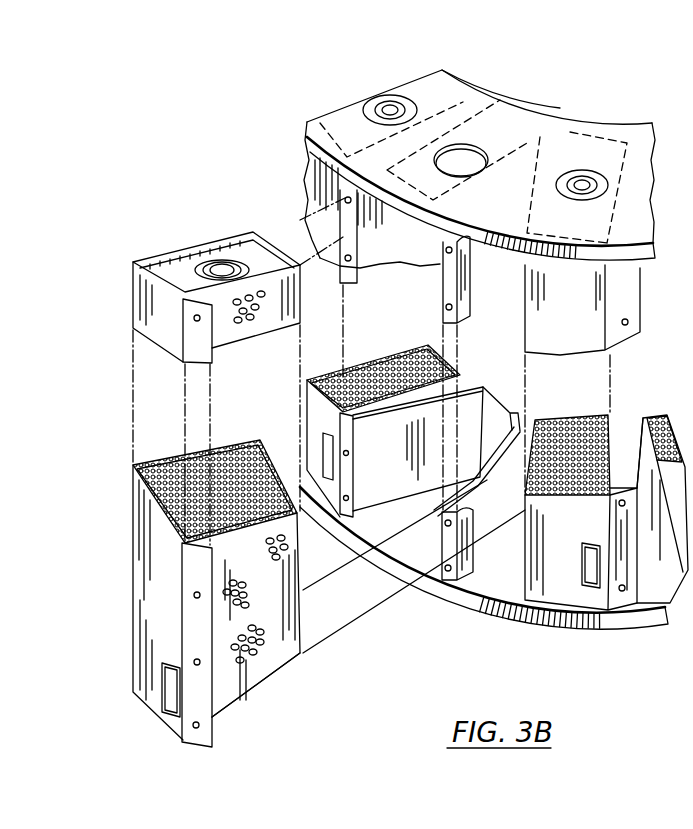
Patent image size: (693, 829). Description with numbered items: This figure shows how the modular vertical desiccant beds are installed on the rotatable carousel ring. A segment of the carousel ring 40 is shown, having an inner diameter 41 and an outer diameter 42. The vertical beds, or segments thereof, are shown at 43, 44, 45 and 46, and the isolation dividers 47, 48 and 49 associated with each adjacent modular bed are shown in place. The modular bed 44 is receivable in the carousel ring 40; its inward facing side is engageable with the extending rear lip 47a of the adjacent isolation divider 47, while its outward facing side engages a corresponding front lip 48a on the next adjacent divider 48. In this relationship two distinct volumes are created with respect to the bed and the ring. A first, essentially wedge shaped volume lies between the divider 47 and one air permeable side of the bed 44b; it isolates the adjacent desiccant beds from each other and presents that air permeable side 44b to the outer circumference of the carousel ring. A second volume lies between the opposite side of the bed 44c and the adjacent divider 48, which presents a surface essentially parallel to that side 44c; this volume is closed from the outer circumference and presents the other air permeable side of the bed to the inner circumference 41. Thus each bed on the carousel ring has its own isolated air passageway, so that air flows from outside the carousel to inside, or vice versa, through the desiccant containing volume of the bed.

The carousel ring 40 is at (529, 197).
The inner diameter 41 is at (490, 97).
The outer diameter 42 is at (512, 233).
The vertical bed 43 is at (313, 417).
The modular bed 44 is at (251, 577).
The air permeable side of the bed 44b is at (232, 447).
The opposite side of the bed 44c is at (288, 648).
The vertical bed 45 is at (579, 540).
The vertical bed 46 is at (664, 438).
The isolation divider 47 is at (397, 465).
The rear lip 47a is at (503, 425).
The isolation divider 48 is at (504, 524).
The front lip 48a is at (444, 553).
The isolation divider 49 is at (633, 457).